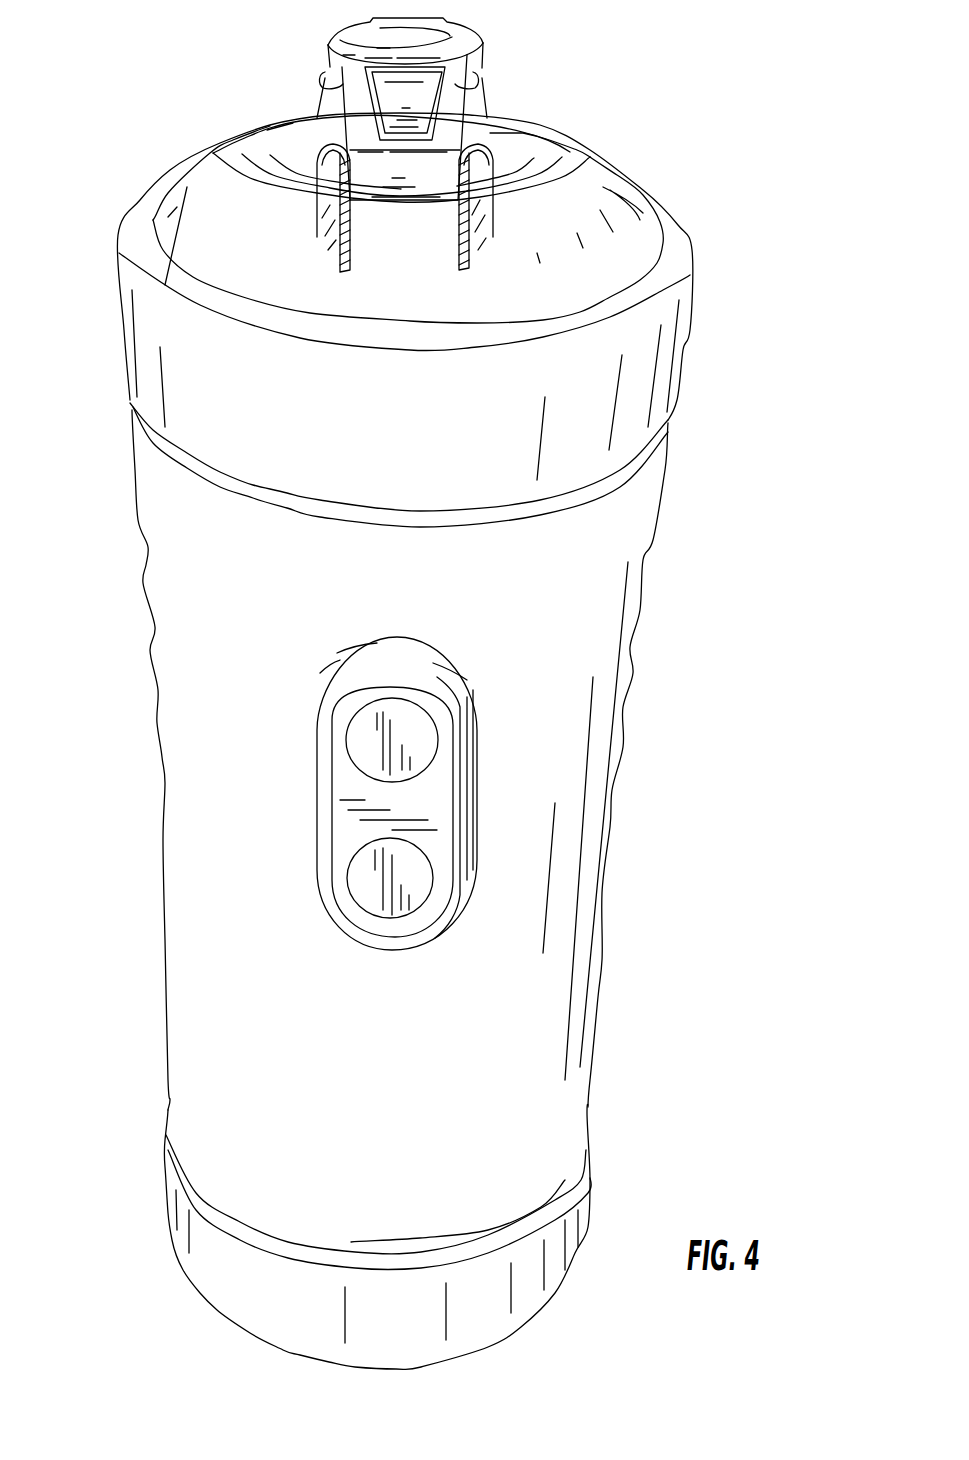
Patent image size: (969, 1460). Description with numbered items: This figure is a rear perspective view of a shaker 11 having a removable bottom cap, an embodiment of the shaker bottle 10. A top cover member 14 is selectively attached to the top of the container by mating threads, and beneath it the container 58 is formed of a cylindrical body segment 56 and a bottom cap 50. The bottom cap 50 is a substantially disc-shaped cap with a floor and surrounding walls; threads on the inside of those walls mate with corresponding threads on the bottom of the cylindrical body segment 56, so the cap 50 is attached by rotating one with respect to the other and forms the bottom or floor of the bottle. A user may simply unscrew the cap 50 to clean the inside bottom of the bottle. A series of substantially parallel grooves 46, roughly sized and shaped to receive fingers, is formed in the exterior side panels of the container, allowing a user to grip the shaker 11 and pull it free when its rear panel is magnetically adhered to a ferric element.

The shaker 11 is at (603, 70).
The shaker bottle 10 is at (688, 358).
The top cover member 14 is at (642, 368).
The grooves 46 is at (140, 625).
The container 58 is at (672, 730).
The cylindrical body segment 56 is at (598, 868).
The bottom cap 50 is at (606, 1213).